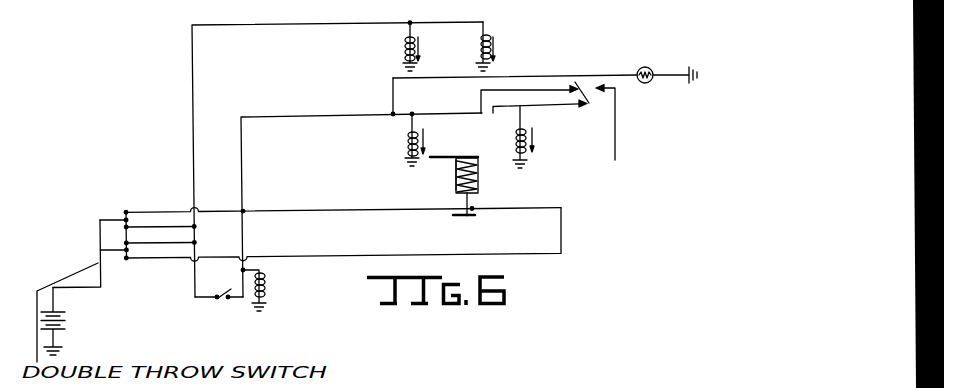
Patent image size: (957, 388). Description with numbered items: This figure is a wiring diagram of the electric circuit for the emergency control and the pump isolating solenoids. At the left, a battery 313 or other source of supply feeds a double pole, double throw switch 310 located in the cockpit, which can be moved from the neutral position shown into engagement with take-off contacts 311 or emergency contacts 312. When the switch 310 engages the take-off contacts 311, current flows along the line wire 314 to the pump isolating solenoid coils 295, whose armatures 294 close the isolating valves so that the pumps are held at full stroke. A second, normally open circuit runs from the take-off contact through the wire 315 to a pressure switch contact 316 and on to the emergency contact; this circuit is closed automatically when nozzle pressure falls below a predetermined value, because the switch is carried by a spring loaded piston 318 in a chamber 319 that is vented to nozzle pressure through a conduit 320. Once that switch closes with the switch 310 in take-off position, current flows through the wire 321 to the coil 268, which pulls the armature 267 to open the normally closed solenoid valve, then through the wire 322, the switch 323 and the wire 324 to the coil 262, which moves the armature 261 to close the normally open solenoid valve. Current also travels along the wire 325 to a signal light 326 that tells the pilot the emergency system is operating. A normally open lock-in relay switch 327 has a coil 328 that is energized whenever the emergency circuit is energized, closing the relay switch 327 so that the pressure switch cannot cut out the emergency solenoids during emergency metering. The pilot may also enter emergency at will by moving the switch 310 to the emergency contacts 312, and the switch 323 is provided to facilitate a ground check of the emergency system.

The armature 261 is at (533, 139).
The coil 262 is at (516, 143).
The armature 267 is at (422, 145).
The coil 268 is at (407, 147).
The armature 294 is at (497, 52).
The solenoid coil 295 is at (491, 34).
The double pole, double throw switch 310 is at (98, 263).
The take-off contact 311 is at (125, 226).
The emergency contact 312 is at (125, 243).
The battery 313 is at (70, 320).
The line wire 314 is at (192, 100).
The wire 315 is at (345, 257).
The contact 316 is at (474, 207).
The spring loaded piston 318 is at (455, 170).
The chamber 319 is at (479, 162).
The conduit 320 is at (438, 153).
The wire 321 is at (277, 113).
The wire 322 is at (481, 93).
The switch 323 is at (598, 92).
The wire 324 is at (537, 106).
The wire 325 is at (578, 74).
The signal light 326 is at (650, 68).
The lock-in relay switch 327 is at (220, 298).
The coil 328 is at (265, 282).